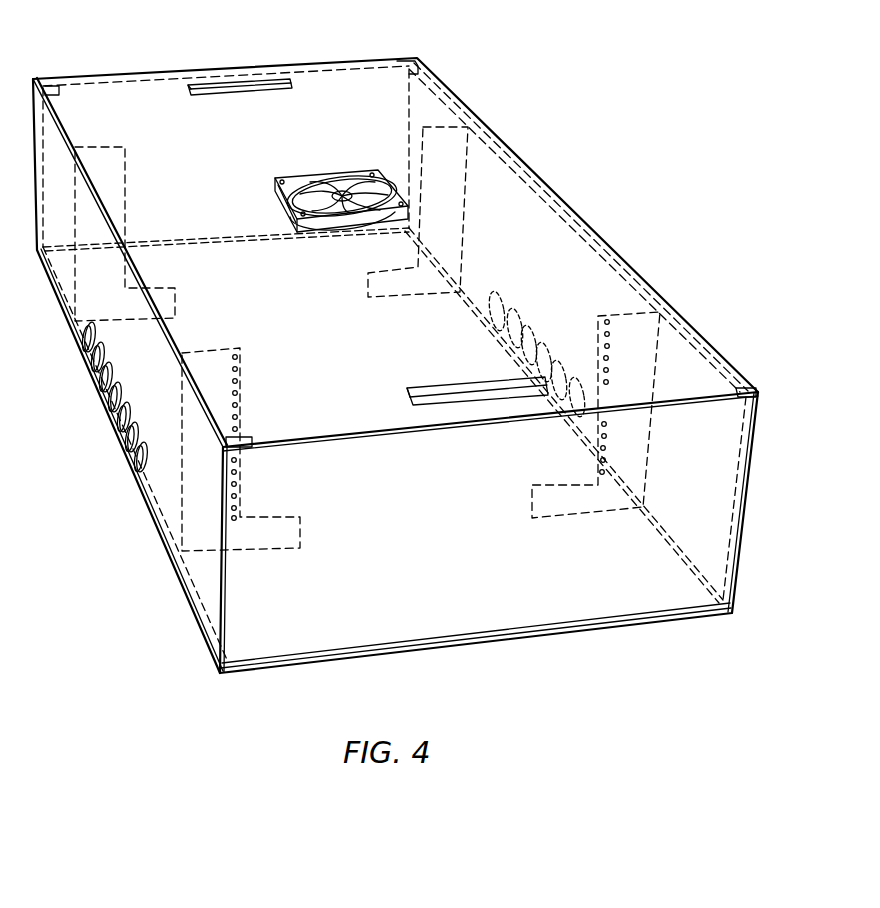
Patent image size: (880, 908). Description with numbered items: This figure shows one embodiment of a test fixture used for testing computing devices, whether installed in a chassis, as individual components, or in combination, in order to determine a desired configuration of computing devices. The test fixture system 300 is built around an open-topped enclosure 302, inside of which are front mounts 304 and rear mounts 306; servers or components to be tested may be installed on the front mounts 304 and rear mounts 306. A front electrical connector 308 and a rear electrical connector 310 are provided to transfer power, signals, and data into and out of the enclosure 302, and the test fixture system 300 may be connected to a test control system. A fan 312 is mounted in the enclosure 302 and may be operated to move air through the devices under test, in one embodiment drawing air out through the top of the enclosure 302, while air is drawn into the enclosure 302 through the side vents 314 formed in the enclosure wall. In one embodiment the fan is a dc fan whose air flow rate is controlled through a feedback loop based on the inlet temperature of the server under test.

The test fixture system 300 is at (493, 53).
The enclosure 302 is at (205, 597).
The front mounts 304 is at (240, 375).
The rear mounts 306 is at (125, 183).
The front electrical connector 308 is at (458, 386).
The rear electrical connector 310 is at (243, 86).
The fan 312 is at (325, 180).
The side vents 314 is at (110, 408).